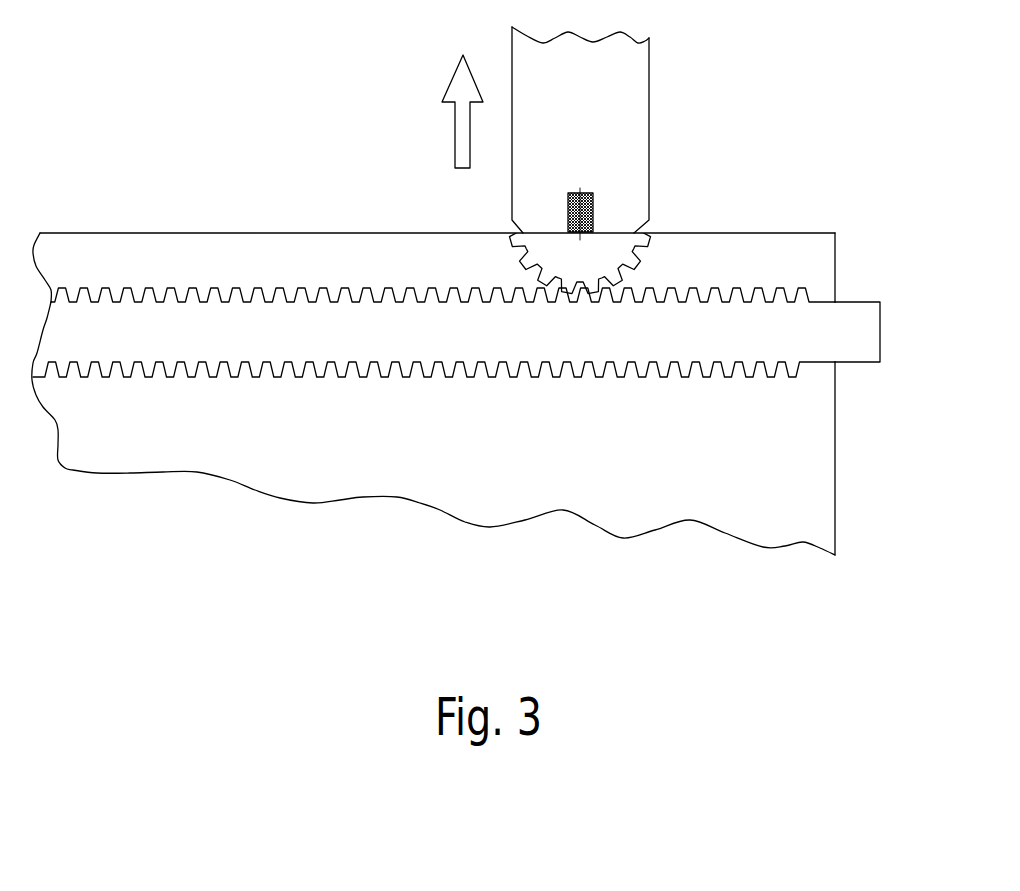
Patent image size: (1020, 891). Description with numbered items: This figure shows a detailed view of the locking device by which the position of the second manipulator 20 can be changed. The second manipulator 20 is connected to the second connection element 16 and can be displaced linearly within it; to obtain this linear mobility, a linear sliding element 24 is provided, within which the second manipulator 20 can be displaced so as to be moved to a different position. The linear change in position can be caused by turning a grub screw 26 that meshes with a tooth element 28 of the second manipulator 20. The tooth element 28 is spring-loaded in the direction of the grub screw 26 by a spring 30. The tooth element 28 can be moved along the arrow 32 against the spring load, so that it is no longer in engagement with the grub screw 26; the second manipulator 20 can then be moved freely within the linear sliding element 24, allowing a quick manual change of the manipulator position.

The second connection element 16 is at (803, 262).
The second manipulator 20 is at (605, 137).
The linear sliding element 24 is at (762, 233).
The grub screw 26 is at (803, 340).
The tooth element 28 is at (547, 262).
The spring 30 is at (593, 213).
The arrow 32 is at (465, 92).